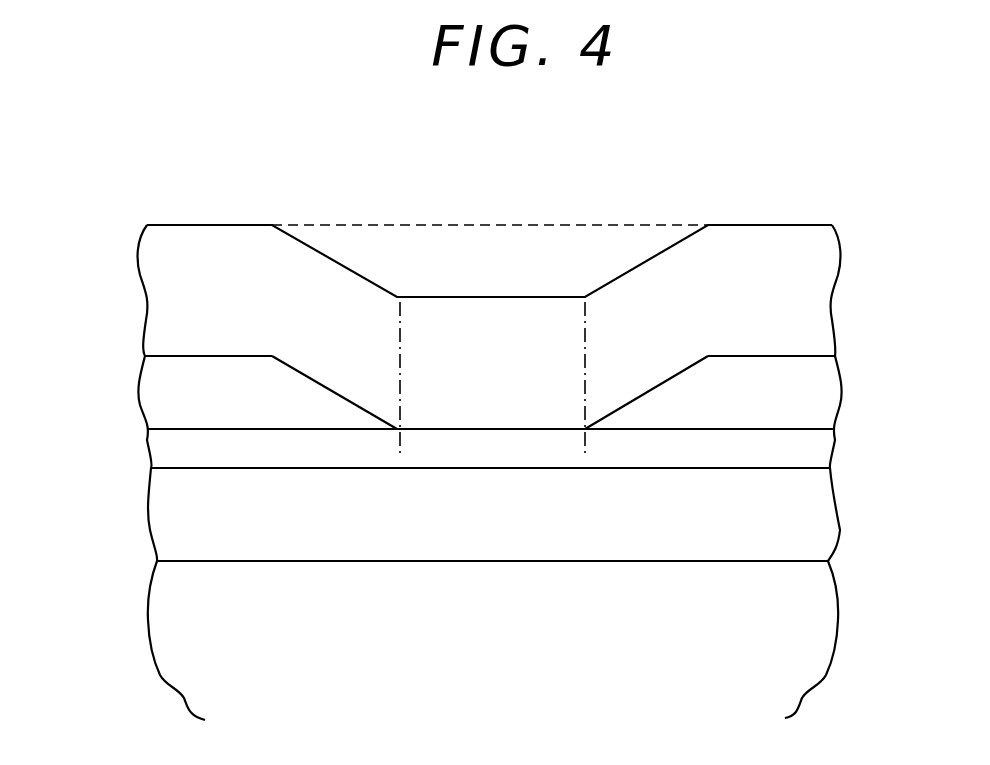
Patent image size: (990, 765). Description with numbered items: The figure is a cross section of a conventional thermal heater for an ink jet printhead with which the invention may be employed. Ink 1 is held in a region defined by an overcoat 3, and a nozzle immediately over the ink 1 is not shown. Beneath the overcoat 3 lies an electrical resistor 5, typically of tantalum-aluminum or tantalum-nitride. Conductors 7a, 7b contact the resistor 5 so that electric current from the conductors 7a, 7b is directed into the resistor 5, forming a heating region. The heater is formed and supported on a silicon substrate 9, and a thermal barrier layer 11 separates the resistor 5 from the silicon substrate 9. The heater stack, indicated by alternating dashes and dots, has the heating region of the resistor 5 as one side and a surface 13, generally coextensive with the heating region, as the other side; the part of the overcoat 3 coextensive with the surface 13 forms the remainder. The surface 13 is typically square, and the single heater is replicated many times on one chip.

The ink 1 is at (478, 271).
The overcoat 3 is at (822, 272).
The electrical resistor 5 is at (818, 452).
The conductor 7a is at (825, 405).
The conductor 7b is at (178, 389).
The silicon substrate 9 is at (812, 636).
The thermal barrier layer 11 is at (810, 520).
The surface 13 is at (513, 297).